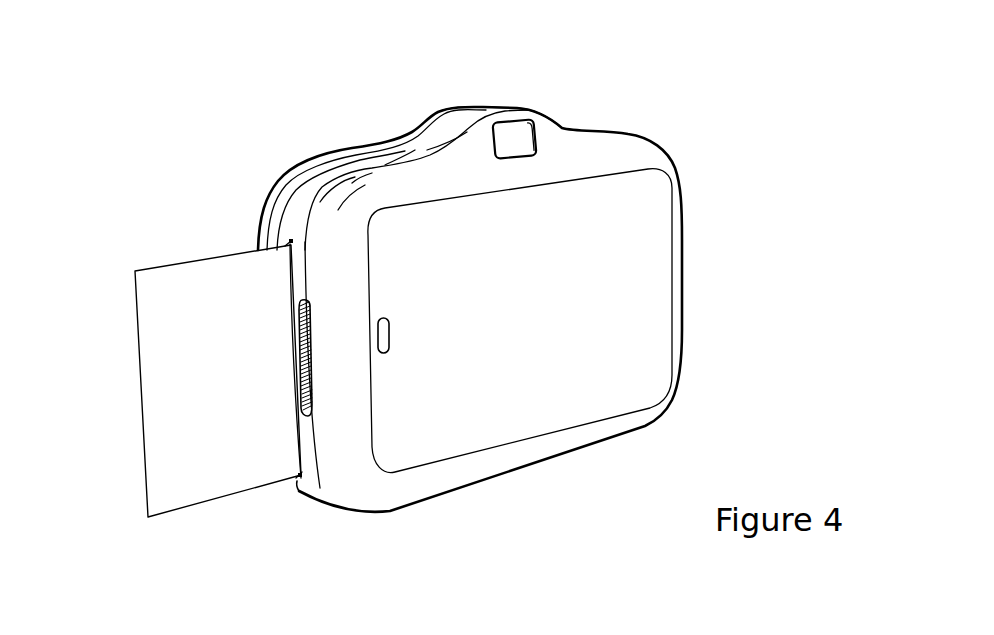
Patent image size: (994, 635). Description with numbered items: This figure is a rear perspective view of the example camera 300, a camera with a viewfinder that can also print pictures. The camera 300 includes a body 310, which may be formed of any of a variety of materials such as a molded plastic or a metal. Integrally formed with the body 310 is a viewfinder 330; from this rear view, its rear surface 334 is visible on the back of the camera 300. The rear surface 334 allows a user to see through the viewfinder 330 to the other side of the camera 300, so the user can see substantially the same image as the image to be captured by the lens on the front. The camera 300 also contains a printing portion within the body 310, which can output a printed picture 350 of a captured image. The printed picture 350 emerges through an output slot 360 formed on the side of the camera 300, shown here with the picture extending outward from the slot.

The example camera 300 is at (177, 126).
The body 310 is at (648, 414).
The viewfinder 330 is at (558, 125).
The rear surface 334 is at (510, 137).
The printed picture 350 is at (162, 283).
The output slot 360 is at (286, 488).